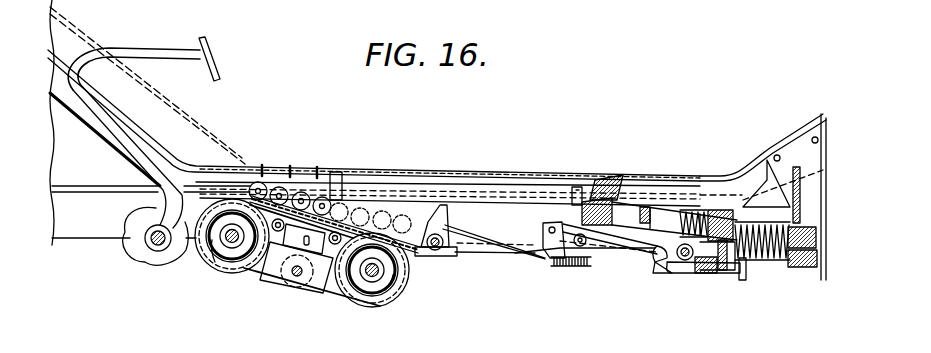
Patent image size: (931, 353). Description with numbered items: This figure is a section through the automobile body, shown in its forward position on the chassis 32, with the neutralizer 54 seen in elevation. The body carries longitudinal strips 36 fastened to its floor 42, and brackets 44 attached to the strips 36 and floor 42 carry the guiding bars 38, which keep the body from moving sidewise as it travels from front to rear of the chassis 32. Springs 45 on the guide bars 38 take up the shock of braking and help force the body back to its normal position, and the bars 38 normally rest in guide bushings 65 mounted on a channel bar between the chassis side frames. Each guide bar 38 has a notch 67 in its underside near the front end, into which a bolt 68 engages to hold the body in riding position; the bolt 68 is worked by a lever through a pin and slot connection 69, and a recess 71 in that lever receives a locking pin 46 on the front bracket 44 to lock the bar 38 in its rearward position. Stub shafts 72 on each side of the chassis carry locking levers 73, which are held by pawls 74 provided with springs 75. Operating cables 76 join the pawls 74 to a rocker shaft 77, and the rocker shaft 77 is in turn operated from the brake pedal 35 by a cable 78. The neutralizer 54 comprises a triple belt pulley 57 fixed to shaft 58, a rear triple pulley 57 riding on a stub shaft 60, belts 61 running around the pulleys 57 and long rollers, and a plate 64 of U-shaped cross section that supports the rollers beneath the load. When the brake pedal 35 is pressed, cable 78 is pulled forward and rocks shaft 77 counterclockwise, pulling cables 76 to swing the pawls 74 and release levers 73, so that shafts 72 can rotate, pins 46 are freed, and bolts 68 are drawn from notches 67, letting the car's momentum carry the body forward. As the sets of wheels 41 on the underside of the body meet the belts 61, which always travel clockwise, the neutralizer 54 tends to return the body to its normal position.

The chassis 32 is at (151, 212).
The brake pedal 35 is at (207, 42).
The longitudinal strips 36 is at (397, 183).
The guiding bars 38 is at (623, 203).
The sets of wheels 41 is at (307, 200).
The floor of the body 42 is at (357, 172).
The brackets 44 is at (580, 185).
The springs 45 is at (687, 213).
The locking pins 46 is at (583, 255).
The neutralizer 54 is at (246, 283).
The triple belt pulley 57 is at (215, 268).
The shaft 58 is at (227, 241).
The stub shaft 60 is at (368, 272).
The belts 61 is at (268, 290).
The plate 64 is at (300, 230).
The guide bushings 65 is at (725, 207).
The notch 67 is at (653, 206).
The bolt 68 is at (723, 258).
The pin and slot connection 69 is at (723, 267).
The recess 71 is at (657, 256).
The stub shafts 72 is at (683, 262).
The locking levers 73 is at (563, 224).
The pawls 74 is at (543, 243).
The springs 75 is at (560, 262).
The operating cables 76 is at (480, 250).
The rocker shaft 77 is at (437, 250).
The cable 78 is at (200, 182).